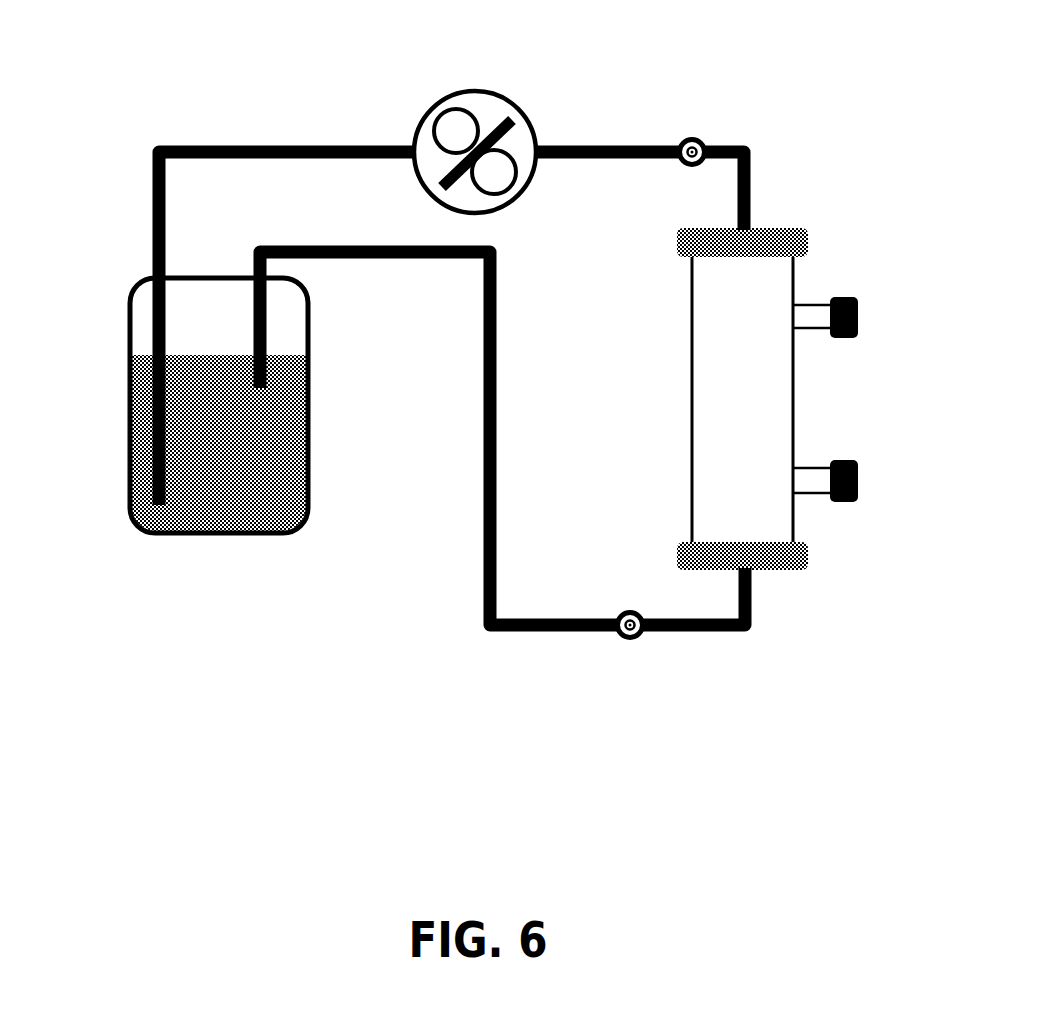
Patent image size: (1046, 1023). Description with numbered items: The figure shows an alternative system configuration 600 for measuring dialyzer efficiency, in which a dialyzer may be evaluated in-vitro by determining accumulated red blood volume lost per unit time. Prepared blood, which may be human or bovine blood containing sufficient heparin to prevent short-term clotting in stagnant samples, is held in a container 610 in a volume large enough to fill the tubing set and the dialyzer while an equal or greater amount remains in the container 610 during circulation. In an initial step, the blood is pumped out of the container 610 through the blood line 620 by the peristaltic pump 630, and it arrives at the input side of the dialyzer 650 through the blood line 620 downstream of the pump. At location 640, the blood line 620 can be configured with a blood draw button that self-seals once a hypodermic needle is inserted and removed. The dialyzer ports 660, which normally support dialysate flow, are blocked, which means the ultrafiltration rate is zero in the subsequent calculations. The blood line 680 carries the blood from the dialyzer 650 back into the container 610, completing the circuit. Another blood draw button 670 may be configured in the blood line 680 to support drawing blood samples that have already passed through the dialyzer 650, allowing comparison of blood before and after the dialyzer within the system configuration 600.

The system configuration 600 is at (188, 43).
The container 610 is at (220, 406).
The blood line 620 is at (320, 138).
The peristaltic pump 630 is at (465, 82).
The blood draw button location 640 is at (693, 128).
The dialyzer 650 is at (742, 399).
The dialyzer ports 660 is at (870, 317).
The blood draw button 670 is at (627, 652).
The blood line 680 is at (473, 328).